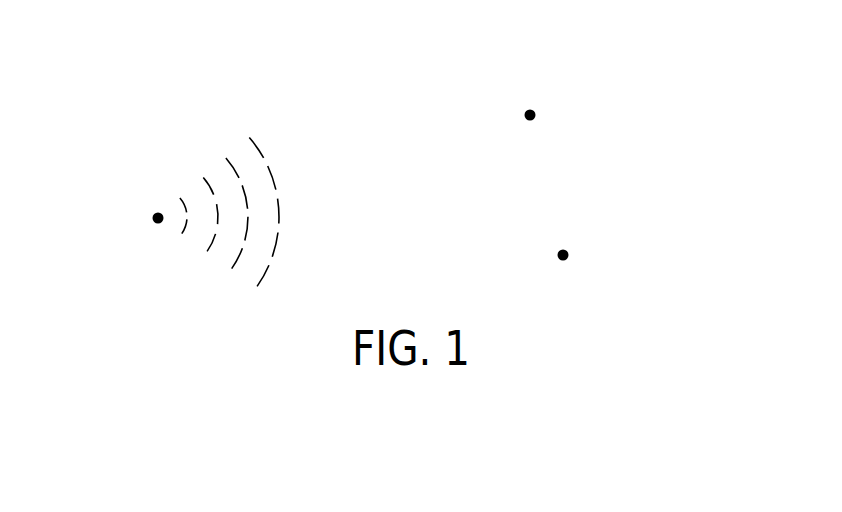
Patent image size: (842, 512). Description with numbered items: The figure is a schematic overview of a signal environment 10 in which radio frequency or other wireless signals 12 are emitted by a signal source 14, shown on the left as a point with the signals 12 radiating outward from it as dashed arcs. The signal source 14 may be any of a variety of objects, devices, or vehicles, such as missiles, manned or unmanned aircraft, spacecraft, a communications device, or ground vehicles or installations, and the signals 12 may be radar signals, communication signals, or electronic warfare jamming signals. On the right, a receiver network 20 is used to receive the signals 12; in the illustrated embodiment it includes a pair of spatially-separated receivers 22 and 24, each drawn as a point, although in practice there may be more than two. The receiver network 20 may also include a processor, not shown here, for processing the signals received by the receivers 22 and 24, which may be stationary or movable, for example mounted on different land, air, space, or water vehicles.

The signal environment 10 is at (355, 90).
The radio frequency signals 12 is at (212, 190).
The signal source 14 is at (153, 218).
The receiver network 20 is at (620, 174).
The first receiver 22 is at (535, 114).
The second receiver 24 is at (568, 254).